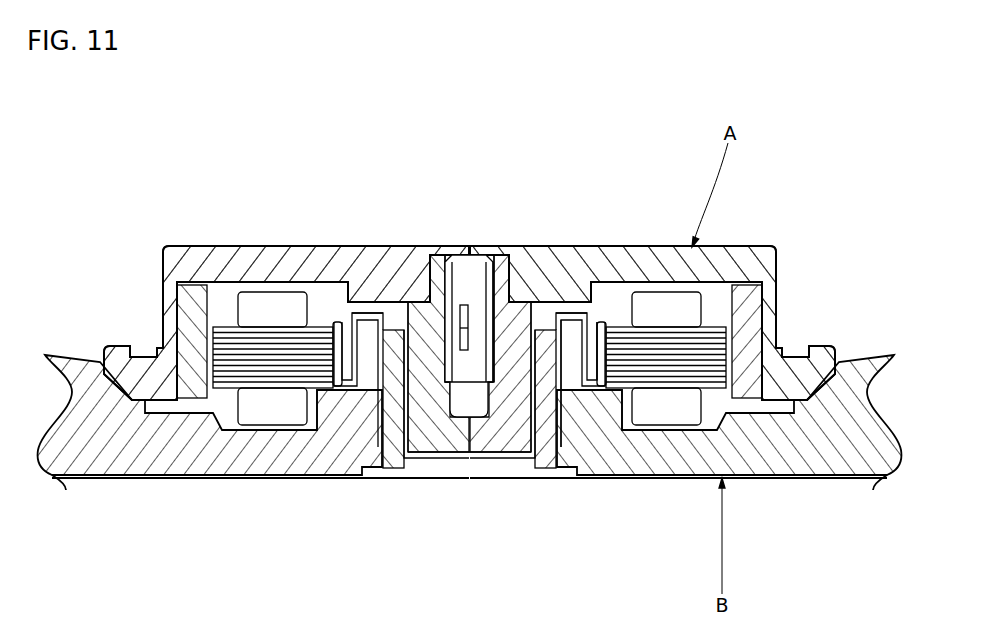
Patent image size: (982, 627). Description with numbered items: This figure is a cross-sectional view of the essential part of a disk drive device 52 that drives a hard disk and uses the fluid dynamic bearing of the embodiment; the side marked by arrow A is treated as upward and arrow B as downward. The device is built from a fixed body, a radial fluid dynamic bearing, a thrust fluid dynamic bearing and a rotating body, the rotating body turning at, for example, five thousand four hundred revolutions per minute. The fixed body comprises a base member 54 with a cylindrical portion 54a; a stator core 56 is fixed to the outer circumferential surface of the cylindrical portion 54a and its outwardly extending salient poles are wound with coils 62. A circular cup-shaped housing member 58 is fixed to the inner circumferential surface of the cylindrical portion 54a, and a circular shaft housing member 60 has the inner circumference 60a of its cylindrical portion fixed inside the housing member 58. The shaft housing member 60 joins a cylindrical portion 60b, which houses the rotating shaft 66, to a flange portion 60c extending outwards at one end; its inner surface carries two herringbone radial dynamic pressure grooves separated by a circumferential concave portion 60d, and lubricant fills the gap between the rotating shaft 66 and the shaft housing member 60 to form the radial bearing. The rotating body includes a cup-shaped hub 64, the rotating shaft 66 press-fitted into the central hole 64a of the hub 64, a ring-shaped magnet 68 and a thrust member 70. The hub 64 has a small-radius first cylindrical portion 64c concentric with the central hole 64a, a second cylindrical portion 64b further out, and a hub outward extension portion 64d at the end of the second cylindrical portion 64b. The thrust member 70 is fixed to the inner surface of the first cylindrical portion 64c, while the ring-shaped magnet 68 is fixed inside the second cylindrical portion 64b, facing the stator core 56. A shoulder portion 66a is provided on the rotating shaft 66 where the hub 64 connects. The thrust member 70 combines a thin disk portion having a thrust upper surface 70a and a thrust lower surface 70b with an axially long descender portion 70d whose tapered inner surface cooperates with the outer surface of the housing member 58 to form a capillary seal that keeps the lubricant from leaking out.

The disk drive device 52 is at (781, 196).
The base member 54 is at (98, 440).
The cylindrical portion 54a is at (343, 408).
The stator core 56 is at (229, 375).
The housing member 58 is at (388, 452).
The shaft housing member 60 is at (520, 428).
The inner circumference 60a is at (447, 430).
The cylindrical portion 60b is at (413, 413).
The flange portion 60c is at (399, 300).
The circumferential concave portion 60d is at (458, 447).
The coils 62 is at (271, 412).
The hub 64 is at (186, 246).
The central hole 64a is at (424, 300).
The second cylindrical portion 64b is at (167, 298).
The first cylindrical portion 64c is at (332, 246).
The hub outward extension portion 64d is at (118, 352).
The rotating shaft 66 is at (472, 256).
The shoulder portion 66a is at (497, 283).
The ring-shaped magnet 68 is at (192, 392).
The thrust member 70 is at (376, 316).
The thrust upper surface 70a is at (556, 300).
The thrust lower surface 70b is at (560, 420).
The descender portion 70d is at (598, 407).